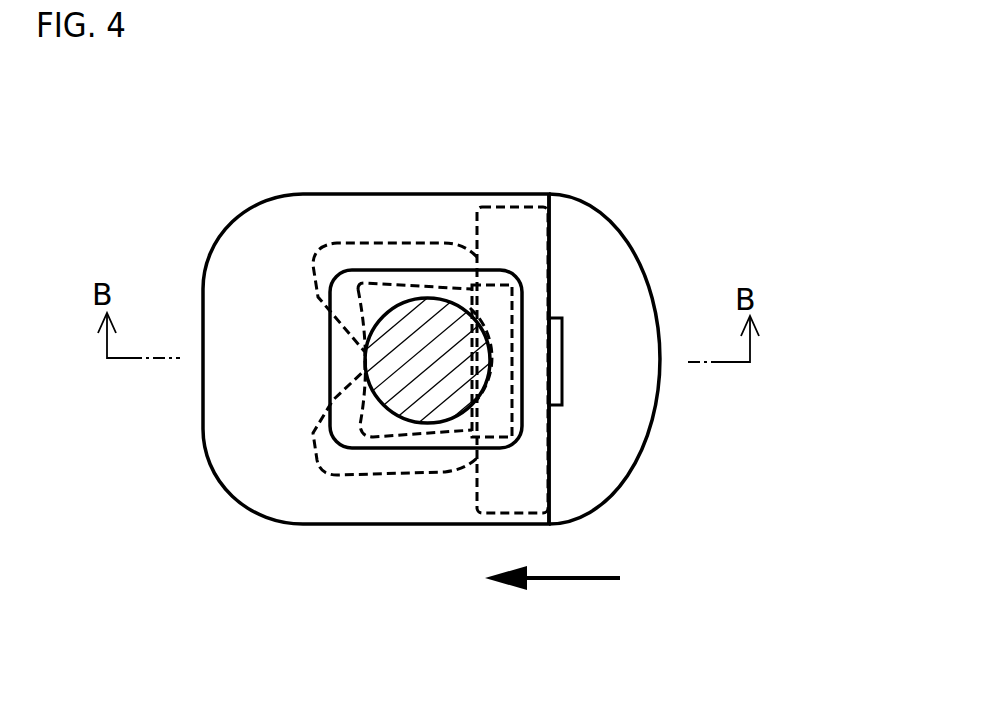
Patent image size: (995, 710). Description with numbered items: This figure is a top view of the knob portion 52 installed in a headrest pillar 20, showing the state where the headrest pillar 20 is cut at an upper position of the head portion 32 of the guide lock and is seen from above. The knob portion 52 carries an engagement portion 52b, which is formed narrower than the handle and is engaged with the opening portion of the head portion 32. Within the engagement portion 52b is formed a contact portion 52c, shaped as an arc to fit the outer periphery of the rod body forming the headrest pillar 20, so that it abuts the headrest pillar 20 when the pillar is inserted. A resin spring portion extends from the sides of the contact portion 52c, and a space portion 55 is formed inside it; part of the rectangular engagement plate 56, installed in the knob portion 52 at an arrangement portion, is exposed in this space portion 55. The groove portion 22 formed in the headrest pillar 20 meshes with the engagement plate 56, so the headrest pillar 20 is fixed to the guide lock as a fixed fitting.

The headrest pillar 20 is at (418, 380).
The groove portion 22 is at (478, 358).
The head portion 32 is at (347, 186).
The knob portion 52 is at (626, 210).
The engagement portion 52b is at (517, 206).
The contact portion 52c is at (488, 342).
The space portion 55 is at (363, 430).
The engagement plate 56 is at (500, 398).